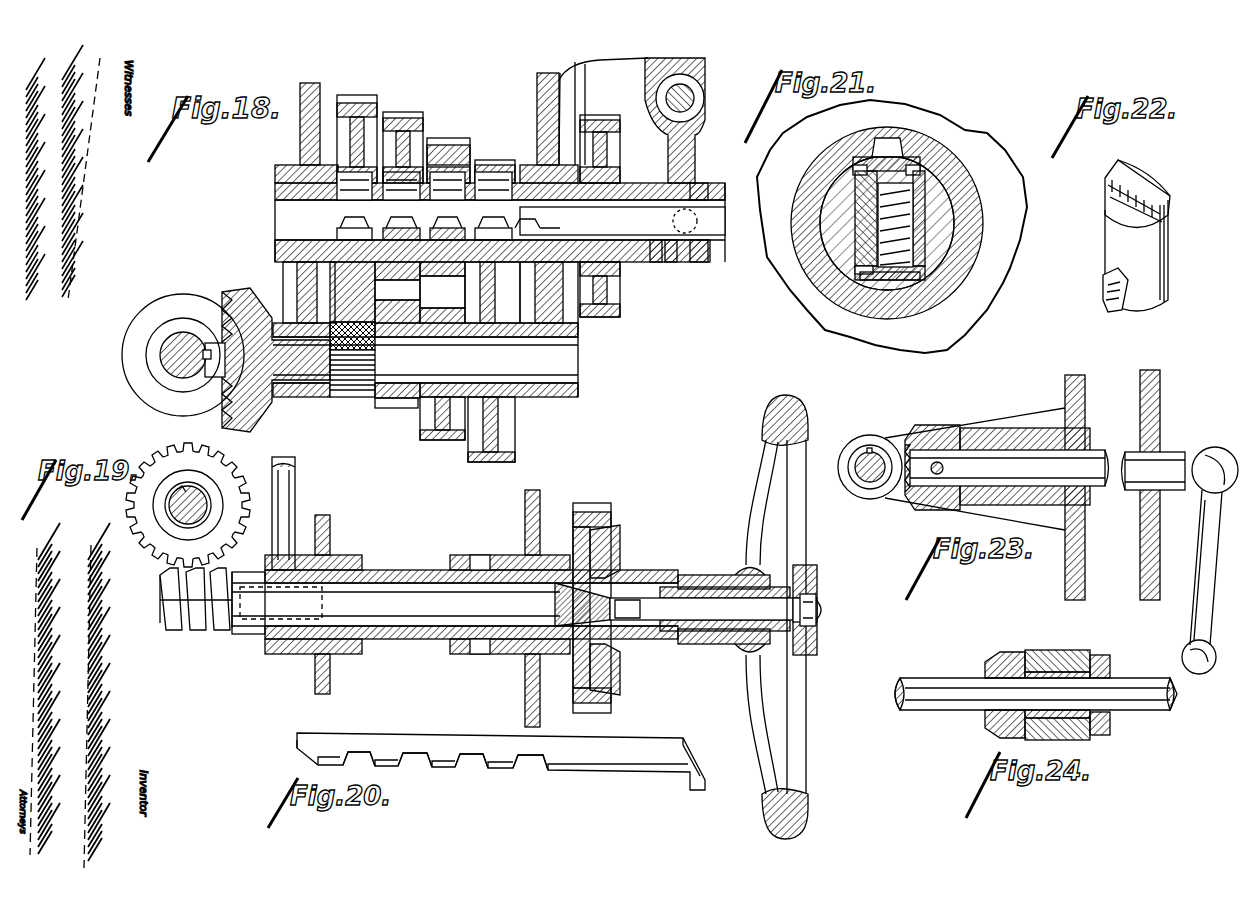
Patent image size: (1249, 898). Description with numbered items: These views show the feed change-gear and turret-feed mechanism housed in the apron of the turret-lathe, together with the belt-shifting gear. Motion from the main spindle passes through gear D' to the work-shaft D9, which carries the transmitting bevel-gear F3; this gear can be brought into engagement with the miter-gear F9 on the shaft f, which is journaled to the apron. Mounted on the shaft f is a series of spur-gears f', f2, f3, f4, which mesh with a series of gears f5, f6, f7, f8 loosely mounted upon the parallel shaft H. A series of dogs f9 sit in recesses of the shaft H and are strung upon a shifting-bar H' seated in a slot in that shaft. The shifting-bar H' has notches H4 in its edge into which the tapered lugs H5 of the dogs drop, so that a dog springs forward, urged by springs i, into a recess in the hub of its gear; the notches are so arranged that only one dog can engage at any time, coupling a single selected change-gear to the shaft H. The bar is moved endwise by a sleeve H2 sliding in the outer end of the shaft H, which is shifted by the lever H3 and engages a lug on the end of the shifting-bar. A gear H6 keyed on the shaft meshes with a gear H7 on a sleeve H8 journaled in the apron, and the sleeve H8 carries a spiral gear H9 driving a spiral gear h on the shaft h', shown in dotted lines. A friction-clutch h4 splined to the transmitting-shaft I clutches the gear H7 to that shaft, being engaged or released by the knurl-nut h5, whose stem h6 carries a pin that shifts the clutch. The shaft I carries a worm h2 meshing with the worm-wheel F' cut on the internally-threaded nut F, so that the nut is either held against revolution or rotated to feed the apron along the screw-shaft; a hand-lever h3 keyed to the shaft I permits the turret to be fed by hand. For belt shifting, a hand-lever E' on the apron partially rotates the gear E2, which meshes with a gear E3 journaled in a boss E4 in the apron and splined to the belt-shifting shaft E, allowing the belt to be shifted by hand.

In FIG. 18, the shaft H is at (481, 222).
In FIG. 18, the shifting-bar H' is at (622, 244).
In FIG. 20, the shifting-bar H' is at (501, 746).
In FIG. 21, the shifting-bar H' is at (879, 223).
In FIG. 18, the sleeve H2 is at (699, 262).
In FIG. 18, the lever H3 is at (697, 142).
In FIG. 18, the notches H4 is at (525, 220).
In FIG. 20, the notches H4 is at (468, 768).
In FIG. 18, the tapered lugs H5 is at (340, 232).
In FIG. 21, the tapered lugs H5 is at (862, 272).
In FIG. 22, the tapered lugs H5 is at (1110, 305).
In FIG. 18, the gear H6 is at (622, 312).
In FIG. 19, the gear H7 is at (585, 503).
In FIG. 19, the sleeve H8 is at (383, 572).
In FIG. 19, the spiral gear H9 is at (330, 556).
In FIG. 18, the shaft f is at (425, 360).
In FIG. 18, the spur-gear f' is at (352, 374).
In FIG. 18, the spur-gear f2 is at (400, 408).
In FIG. 18, the spur-gear f3 is at (446, 440).
In FIG. 18, the spur-gear f4 is at (490, 462).
In FIG. 18, the gear f5 is at (355, 95).
In FIG. 18, the gear f6 is at (398, 112).
In FIG. 18, the gear f7 is at (447, 138).
In FIG. 18, the gear f8 is at (488, 160).
In FIG. 18, the dogs f9 is at (300, 165).
In FIG. 21, the dogs f9 is at (905, 170).
In FIG. 22, the dogs f9 is at (1168, 236).
In FIG. 19, the nut F is at (188, 505).
In FIG. 19, the worm-wheel F' is at (146, 505).
In FIG. 18, the miter-gear F3 is at (145, 395).
In FIG. 18, the miter-gear F9 is at (238, 297).
In FIG. 19, the gear D' is at (173, 510).
In FIG. 18, the work-shaft D9 is at (170, 338).
In FIG. 19, the transmitting-shaft I is at (455, 604).
In FIG. 21, the springs i is at (897, 258).
In FIG. 19, the spiral gear h is at (313, 666).
In FIG. 19, the shaft h' is at (296, 513).
In FIG. 19, the worm h2 is at (203, 630).
In FIG. 19, the hand-lever h3 is at (760, 436).
In FIG. 19, the friction-clutch h4 is at (627, 552).
In FIG. 19, the knurl-nut h5 is at (822, 642).
In FIG. 19, the stem h6 is at (695, 636).
In FIG. 23, the belt-shifting shaft E is at (969, 482).
In FIG. 24, the belt-shifting shaft E is at (1036, 709).
In FIG. 23, the hand-lever E' is at (1180, 522).
In FIG. 23, the gear E2 is at (930, 508).
In FIG. 23, the gear E3 is at (876, 500).
In FIG. 24, the gear E3 is at (1006, 655).
In FIG. 24, the boss E4 is at (1040, 652).